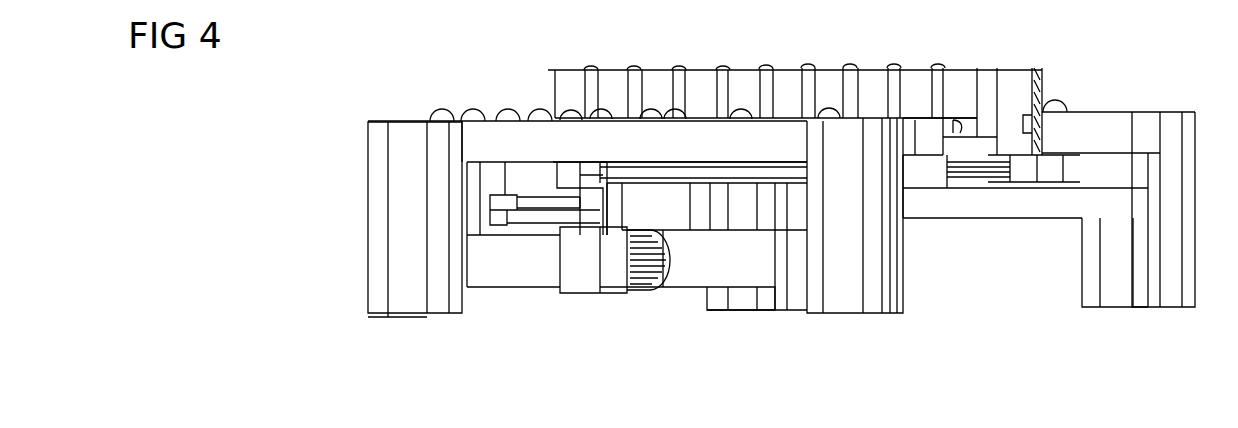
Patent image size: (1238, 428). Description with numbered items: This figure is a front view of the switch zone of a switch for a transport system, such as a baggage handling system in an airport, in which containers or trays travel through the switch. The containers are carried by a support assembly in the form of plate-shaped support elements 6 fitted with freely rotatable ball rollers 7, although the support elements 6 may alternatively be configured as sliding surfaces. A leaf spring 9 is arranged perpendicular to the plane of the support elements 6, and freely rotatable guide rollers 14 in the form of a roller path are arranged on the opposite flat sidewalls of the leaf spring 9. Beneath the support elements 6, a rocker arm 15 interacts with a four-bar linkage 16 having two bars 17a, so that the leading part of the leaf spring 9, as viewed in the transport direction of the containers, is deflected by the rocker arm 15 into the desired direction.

The support elements 6 is at (492, 124).
The ball rollers 7 is at (442, 118).
The leaf spring 9 is at (987, 74).
The guide rollers 14 is at (617, 76).
The rocker arm 15 is at (535, 214).
The four-bar linkage 16 is at (742, 193).
The bars 17a is at (690, 185).